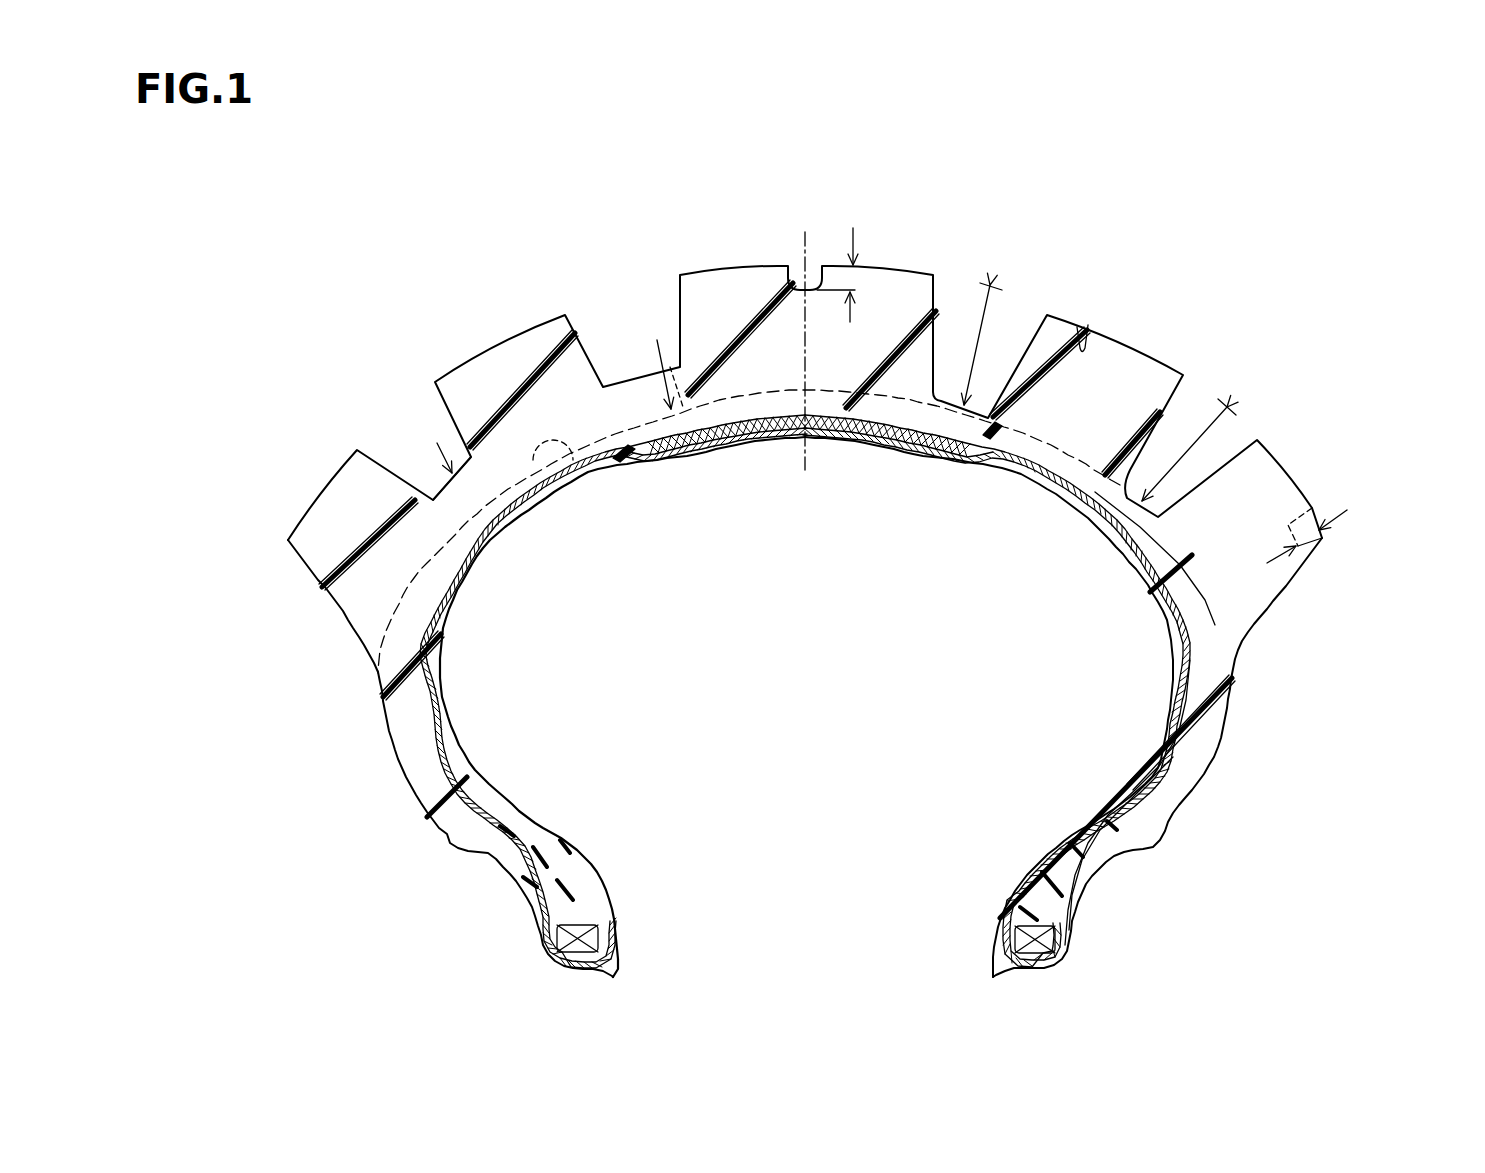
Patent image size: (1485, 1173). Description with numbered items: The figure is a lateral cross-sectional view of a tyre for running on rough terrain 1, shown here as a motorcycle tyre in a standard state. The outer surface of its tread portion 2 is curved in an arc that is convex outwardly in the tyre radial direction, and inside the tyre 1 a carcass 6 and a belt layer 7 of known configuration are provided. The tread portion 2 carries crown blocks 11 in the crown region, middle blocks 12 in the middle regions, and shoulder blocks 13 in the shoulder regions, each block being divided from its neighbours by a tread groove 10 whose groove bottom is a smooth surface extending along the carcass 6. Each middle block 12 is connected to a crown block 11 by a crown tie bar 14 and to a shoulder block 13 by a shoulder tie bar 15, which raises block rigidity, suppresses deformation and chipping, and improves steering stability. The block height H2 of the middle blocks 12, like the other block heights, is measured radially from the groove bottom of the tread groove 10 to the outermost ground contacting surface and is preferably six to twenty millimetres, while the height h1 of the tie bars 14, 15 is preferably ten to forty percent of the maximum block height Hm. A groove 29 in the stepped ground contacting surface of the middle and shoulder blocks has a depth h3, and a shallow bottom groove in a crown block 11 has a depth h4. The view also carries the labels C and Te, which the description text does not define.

The tyre for running on rough terrain 1 is at (1297, 238).
The tread portion 2 is at (1200, 270).
The carcass 6 is at (1175, 673).
The belt layer 7 is at (912, 432).
The tread groove 10 is at (578, 462).
The crown blocks 11 is at (733, 262).
The middle blocks 12 is at (466, 345).
The shoulder blocks 13 is at (318, 470).
The crown tie bar 14 is at (628, 380).
The shoulder tie bar 15 is at (432, 480).
The groove 29 is at (1318, 508).
The tire equator C is at (806, 334).
The tread edge Te is at (288, 540).
The maximum block height Hm is at (978, 352).
The block height of middle blocks H2 is at (1198, 452).
The height of tie bars h1 is at (655, 400).
The depth of grooves h3 is at (1310, 538).
The depth of shallow bottom grooves h4 is at (858, 302).